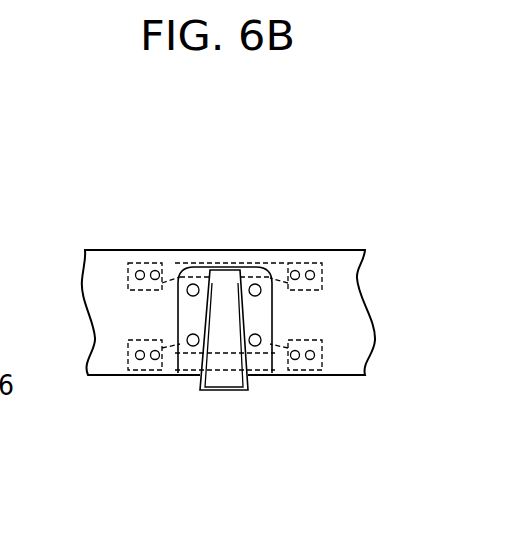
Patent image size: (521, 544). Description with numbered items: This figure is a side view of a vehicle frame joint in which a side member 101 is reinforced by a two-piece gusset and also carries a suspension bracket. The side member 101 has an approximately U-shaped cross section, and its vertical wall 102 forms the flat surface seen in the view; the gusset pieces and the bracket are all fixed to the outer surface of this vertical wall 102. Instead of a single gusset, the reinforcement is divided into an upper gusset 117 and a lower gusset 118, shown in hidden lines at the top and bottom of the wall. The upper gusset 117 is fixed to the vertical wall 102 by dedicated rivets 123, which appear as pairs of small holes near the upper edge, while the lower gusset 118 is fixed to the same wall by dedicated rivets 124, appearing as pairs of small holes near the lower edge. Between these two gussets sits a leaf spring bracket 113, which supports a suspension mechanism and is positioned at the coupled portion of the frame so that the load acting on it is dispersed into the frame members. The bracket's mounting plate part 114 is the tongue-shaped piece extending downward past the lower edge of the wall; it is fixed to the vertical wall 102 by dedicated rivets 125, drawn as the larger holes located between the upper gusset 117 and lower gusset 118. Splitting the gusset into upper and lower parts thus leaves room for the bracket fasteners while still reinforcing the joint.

The side member 101 is at (108, 247).
The vertical wall 102 is at (90, 268).
The leaf spring bracket 113 is at (228, 252).
The mounting plate part 114 is at (190, 363).
The upper gusset 117 is at (317, 253).
The lower gusset 118 is at (320, 366).
The rivets 123 is at (155, 270).
The rivets 124 is at (155, 360).
The rivets 125 is at (190, 334).